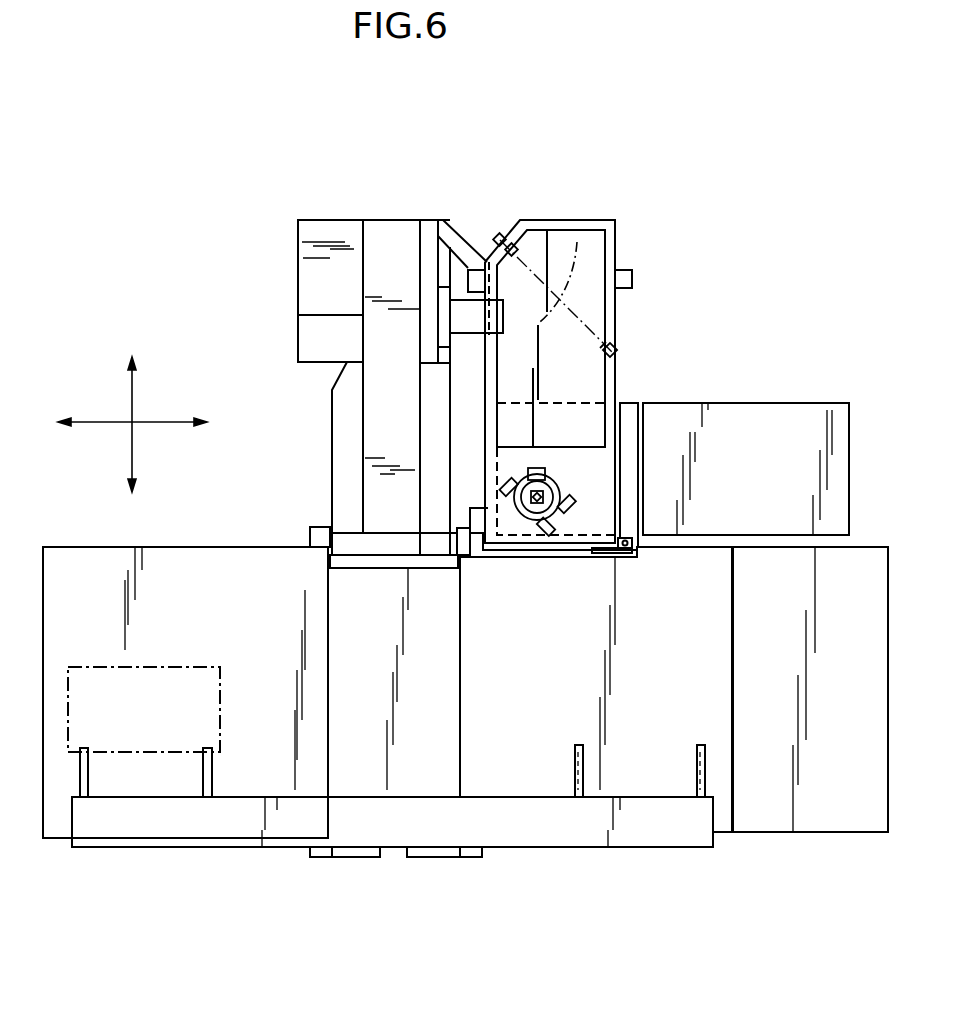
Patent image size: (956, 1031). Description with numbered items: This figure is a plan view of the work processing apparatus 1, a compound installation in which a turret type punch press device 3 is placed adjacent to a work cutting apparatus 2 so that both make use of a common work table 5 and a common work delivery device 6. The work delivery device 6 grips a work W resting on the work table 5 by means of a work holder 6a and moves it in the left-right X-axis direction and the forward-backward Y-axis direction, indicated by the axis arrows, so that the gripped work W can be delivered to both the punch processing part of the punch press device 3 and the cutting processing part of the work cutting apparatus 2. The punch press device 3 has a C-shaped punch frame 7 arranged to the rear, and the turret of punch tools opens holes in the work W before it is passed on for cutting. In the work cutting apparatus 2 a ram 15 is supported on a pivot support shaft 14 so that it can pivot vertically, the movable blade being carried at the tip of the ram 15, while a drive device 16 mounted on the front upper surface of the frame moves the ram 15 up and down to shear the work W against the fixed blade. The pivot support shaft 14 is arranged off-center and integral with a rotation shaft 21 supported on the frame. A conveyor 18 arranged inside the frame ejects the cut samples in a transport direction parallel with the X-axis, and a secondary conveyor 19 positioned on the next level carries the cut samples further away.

The work processing apparatus 1 is at (198, 262).
The work cutting apparatus 2 is at (623, 270).
The turret type punch press device 3 is at (372, 218).
The work table 5 is at (540, 763).
The work delivery device 6 is at (228, 830).
The work holder 6a is at (88, 772).
The C-shaped punch frame 7 is at (377, 478).
The pivot support shaft 14 is at (575, 240).
The ram 15 is at (617, 362).
The drive device 16 is at (553, 490).
The conveyor 18 is at (624, 408).
The secondary conveyor 19 is at (808, 418).
The rotation shaft 21 is at (500, 234).
The work W is at (168, 667).